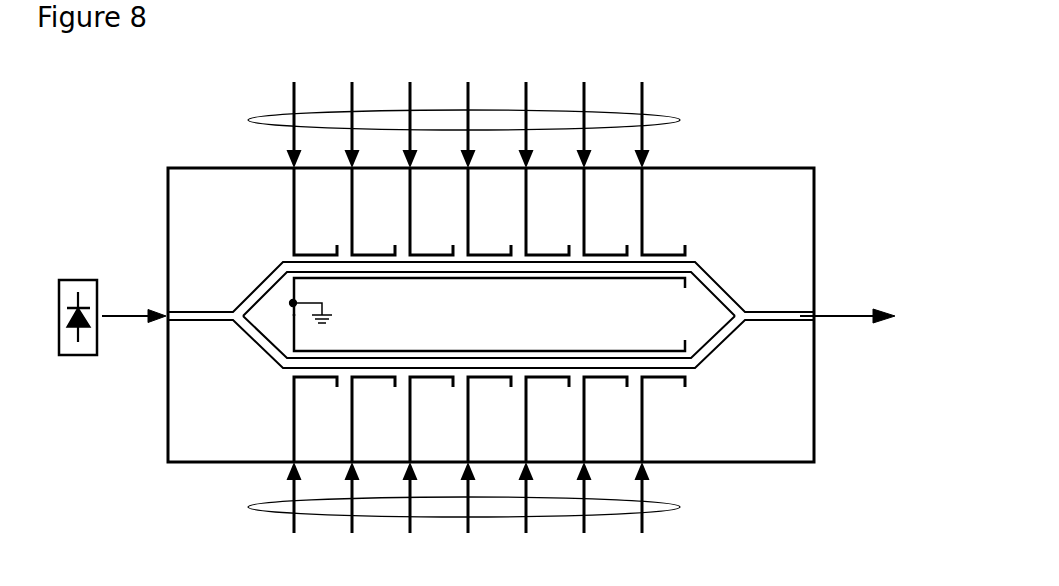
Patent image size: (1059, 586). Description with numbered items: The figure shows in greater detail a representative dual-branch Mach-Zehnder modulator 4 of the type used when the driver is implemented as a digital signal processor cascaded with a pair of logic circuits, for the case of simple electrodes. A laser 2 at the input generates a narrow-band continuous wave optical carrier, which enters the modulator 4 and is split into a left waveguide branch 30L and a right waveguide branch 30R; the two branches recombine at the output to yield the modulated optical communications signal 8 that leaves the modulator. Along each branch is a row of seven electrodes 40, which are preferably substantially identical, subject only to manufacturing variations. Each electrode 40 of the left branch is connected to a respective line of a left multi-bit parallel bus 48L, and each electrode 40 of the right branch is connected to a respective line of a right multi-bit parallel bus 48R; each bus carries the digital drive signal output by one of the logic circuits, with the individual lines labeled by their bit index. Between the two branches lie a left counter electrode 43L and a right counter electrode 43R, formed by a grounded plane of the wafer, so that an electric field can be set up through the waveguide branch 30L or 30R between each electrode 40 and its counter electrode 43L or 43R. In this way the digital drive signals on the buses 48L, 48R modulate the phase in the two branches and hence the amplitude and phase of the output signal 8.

The laser 2 is at (78, 280).
The MZ modulator 4 is at (780, 168).
The optical communications signal 8 is at (842, 320).
The left waveguide branch 30L is at (718, 283).
The right waveguide branch 30R is at (718, 343).
The electrodes 40 is at (311, 254).
The left counter electrode 43L is at (483, 278).
The right counter electrode 43R is at (459, 352).
The left multi-bit parallel bus 48L is at (248, 120).
The right multi-bit parallel bus 48R is at (250, 507).